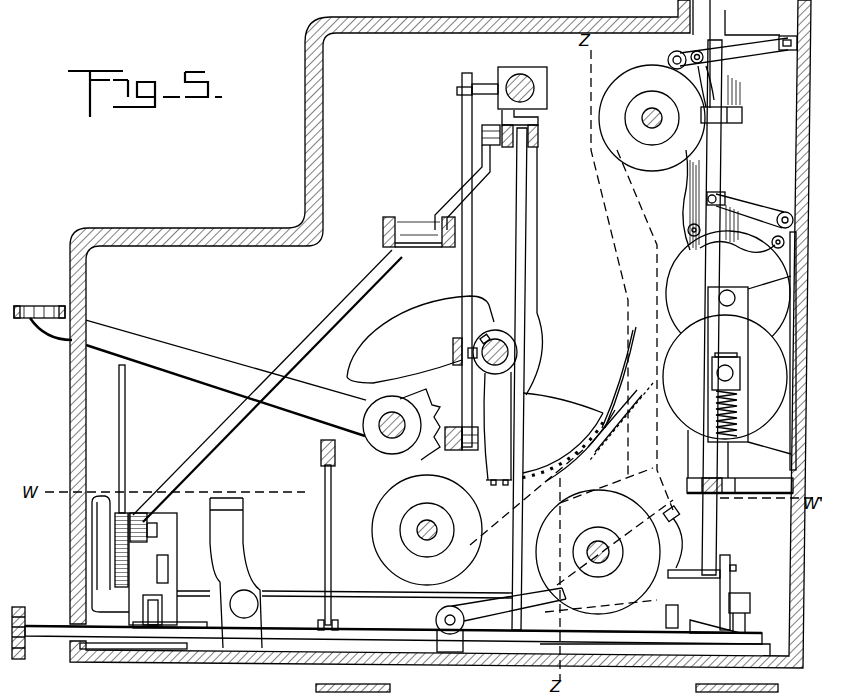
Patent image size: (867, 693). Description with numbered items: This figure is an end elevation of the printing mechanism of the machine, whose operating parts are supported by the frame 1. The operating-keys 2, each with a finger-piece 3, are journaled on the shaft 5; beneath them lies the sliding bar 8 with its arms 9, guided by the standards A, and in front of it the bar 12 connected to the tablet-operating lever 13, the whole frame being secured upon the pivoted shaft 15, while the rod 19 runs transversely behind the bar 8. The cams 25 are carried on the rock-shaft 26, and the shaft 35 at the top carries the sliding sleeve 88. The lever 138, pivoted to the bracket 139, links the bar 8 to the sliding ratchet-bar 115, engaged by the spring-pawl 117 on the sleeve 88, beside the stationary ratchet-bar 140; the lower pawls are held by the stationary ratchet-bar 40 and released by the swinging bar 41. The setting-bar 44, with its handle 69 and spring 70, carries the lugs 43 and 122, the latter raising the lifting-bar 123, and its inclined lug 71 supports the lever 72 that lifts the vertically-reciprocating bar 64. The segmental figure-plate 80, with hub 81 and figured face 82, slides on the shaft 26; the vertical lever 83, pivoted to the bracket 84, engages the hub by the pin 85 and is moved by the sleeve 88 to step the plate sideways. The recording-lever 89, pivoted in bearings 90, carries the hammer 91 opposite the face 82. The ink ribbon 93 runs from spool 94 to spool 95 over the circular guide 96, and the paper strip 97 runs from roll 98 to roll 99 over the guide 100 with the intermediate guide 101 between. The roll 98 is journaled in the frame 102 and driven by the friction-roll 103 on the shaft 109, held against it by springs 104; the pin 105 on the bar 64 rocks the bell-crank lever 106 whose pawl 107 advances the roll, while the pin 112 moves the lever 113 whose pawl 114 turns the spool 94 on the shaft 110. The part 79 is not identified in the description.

The frame 1 is at (306, 150).
The operating-keys 2 is at (232, 372).
The finger-piece 3 is at (46, 301).
The shaft 5 is at (385, 437).
The sliding bar 8 is at (115, 558).
The arms 9 is at (126, 440).
The bar 12 is at (103, 500).
The tablet-operating lever 13 is at (393, 623).
The shaft 15 is at (247, 603).
The rod 19 is at (160, 524).
The cams 25 is at (403, 330).
The rock-shaft 26 is at (500, 348).
The shaft 35 is at (534, 90).
The stationary ratchet-bar 40 is at (168, 573).
The swinging bar 41 is at (175, 610).
The lug 43 is at (195, 628).
The setting-bar 44 is at (300, 650).
The vertically-reciprocating bar 64 is at (723, 165).
The handle 69 is at (29, 645).
The spring 70 is at (331, 565).
The inclined lug 71 is at (702, 622).
The lever 72 is at (732, 594).
The arm 79 is at (690, 564).
The segmental figure-plate 80 is at (516, 428).
The hub or collar 81 is at (500, 330).
The segmental circular face 82 is at (590, 440).
The vertical lever 83 is at (473, 276).
The bracket 84 is at (453, 450).
The pin 85 is at (453, 352).
The sliding sleeve 88 is at (516, 72).
The recording-lever 89 is at (684, 540).
The bearings 90 is at (452, 652).
The hammer 91 is at (671, 505).
The ink-carrying ribbon 93 is at (634, 306).
The spool 94 is at (652, 157).
The spool 95 is at (427, 530).
The circular guide 96 is at (624, 383).
The strip of paper 97 is at (632, 421).
The roll 98 is at (725, 377).
The roll 99 is at (598, 552).
The guide 100 is at (627, 415).
The intermediate guide 101 is at (580, 457).
The frame 102 is at (752, 351).
The friction-roll 103 is at (728, 284).
The springs 104 is at (732, 405).
The pin 105 is at (722, 196).
The bell-crank lever 106 is at (752, 212).
The pawl 107 is at (768, 250).
The shaft 109 is at (719, 298).
The shaft 110 is at (660, 124).
The pin 112 is at (781, 38).
The lever 113 is at (745, 50).
The pawl 114 is at (706, 80).
The sliding ratchet-bar 115 is at (510, 147).
The spring-pawl 117 is at (502, 117).
The inclined lug 122 is at (575, 652).
The lifting-bar 123 is at (528, 190).
The lever 138 is at (335, 318).
The bracket 139 is at (383, 236).
The stationary ratchet-bar 140 is at (561, 149).
The standards A is at (177, 541).